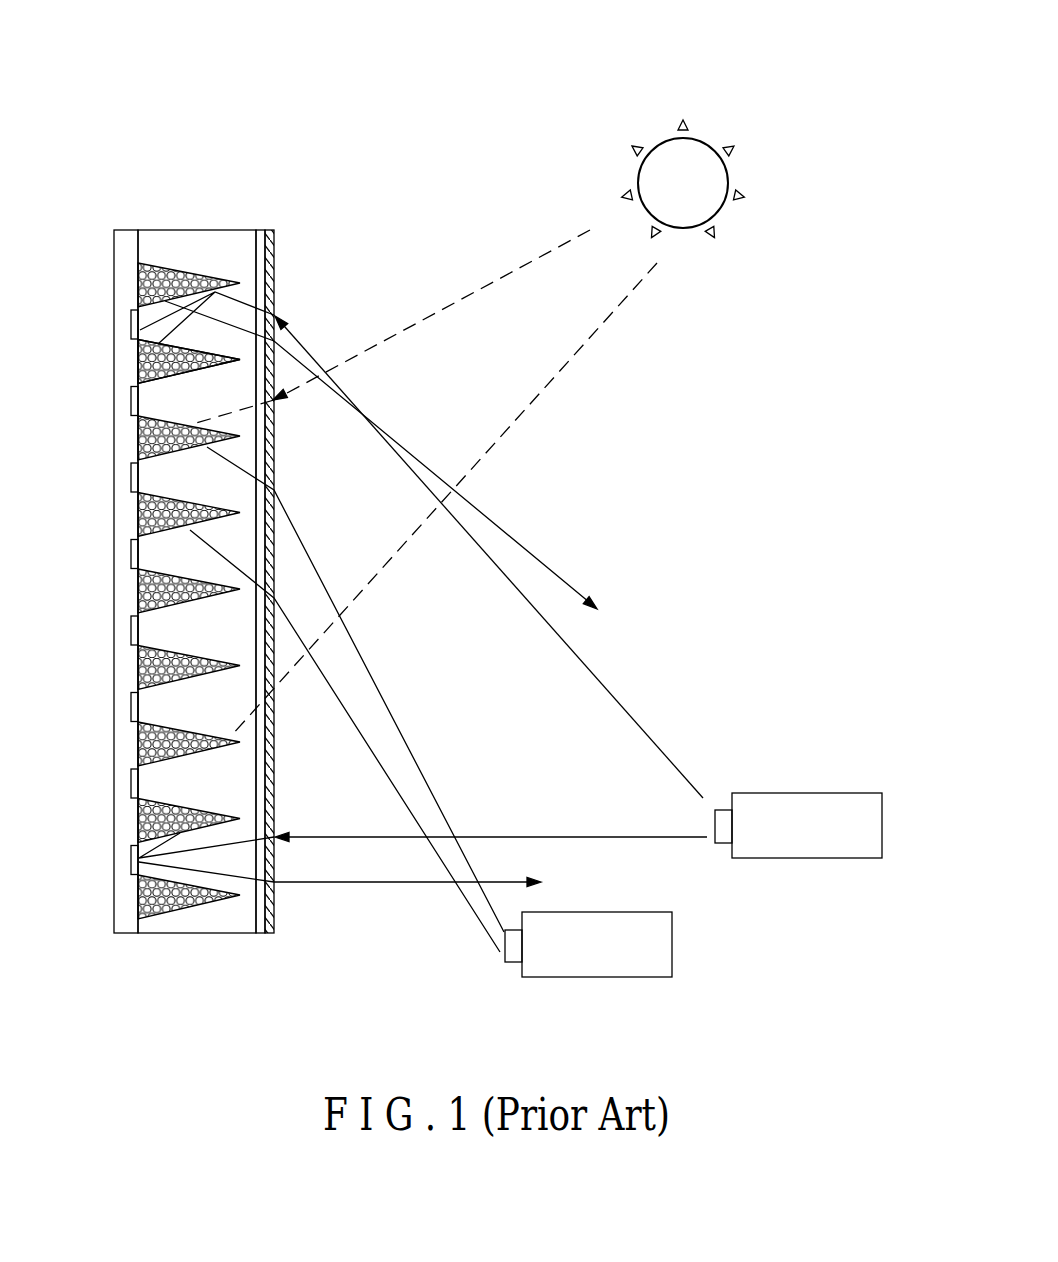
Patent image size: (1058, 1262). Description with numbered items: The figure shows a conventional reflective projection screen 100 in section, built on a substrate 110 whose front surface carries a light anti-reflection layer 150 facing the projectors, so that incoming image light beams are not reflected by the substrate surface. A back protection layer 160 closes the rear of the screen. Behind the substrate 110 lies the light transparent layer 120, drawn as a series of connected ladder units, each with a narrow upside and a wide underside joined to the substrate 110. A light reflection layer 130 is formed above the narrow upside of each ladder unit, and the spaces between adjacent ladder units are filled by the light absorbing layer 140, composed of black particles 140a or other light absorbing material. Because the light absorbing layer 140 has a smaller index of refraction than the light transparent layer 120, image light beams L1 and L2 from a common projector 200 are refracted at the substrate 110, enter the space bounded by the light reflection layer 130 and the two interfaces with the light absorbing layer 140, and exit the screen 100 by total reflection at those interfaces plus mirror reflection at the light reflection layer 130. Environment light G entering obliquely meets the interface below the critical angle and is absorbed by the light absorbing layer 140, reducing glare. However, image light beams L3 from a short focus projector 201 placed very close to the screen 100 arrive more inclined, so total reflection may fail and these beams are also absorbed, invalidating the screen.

The reflective projection screen 100 is at (409, 76).
The substrate 110 is at (260, 237).
The light transparent layer 120 is at (233, 790).
The light reflection layer 130 is at (137, 553).
The light absorbing layer 140 is at (140, 277).
The black particles 140a is at (138, 363).
The light anti-reflection layer 150 is at (273, 263).
The back protection layer 160 is at (128, 250).
The projector 200 is at (853, 807).
The short focus projector 201 is at (653, 948).
The environment light G is at (502, 278).
The image light beam L1 is at (598, 683).
The image light beam L2 is at (608, 837).
The image light beams L3 is at (404, 731).